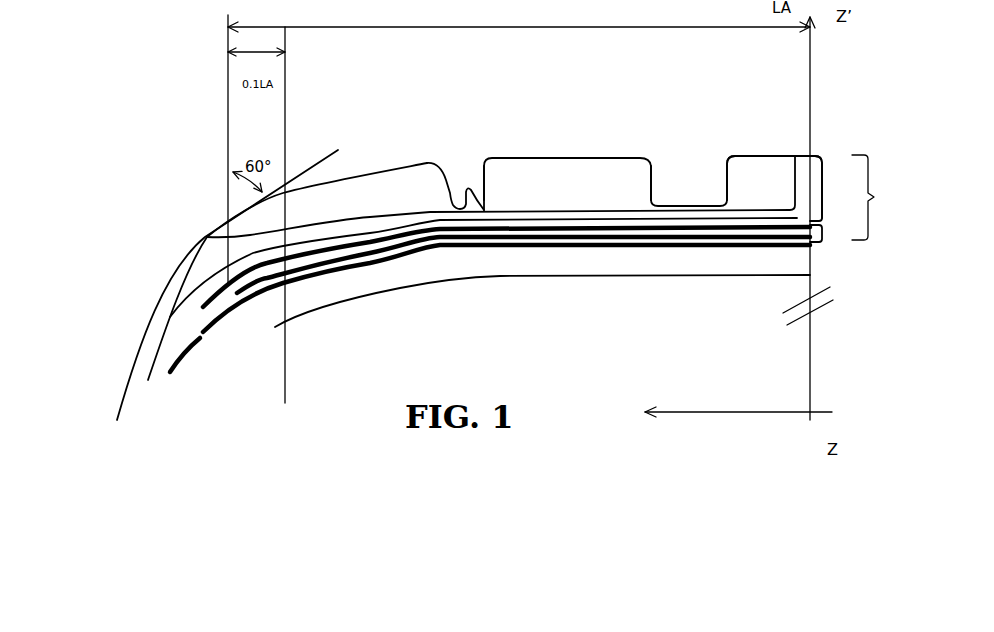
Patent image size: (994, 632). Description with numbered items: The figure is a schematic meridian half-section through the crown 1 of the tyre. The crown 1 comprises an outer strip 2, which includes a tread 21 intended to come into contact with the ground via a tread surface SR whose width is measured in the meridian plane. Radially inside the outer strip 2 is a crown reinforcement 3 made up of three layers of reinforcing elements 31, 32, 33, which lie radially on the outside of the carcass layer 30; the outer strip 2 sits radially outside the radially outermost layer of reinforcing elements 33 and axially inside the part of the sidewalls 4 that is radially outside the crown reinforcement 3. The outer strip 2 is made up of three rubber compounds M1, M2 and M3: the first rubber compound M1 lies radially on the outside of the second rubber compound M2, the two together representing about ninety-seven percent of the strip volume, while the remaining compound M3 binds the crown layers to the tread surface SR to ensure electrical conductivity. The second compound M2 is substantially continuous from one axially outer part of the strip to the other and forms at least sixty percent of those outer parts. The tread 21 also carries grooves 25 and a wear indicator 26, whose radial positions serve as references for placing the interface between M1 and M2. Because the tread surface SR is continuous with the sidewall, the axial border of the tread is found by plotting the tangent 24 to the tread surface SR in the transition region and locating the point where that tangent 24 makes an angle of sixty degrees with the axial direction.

The crown 1 is at (874, 197).
The outer strip 2 is at (822, 187).
The crown reinforcement 3 is at (822, 233).
The sidewalls 4 is at (158, 302).
The tread 21 is at (753, 178).
The tangent 24 is at (160, 258).
The grooves 25 is at (468, 177).
The wear indicator 26 is at (451, 199).
The carcass layer 30 is at (187, 353).
The layer of reinforcing elements 31 is at (500, 248).
The layer of reinforcing elements 32 is at (545, 246).
The radially outermost layer of reinforcing elements 33 is at (403, 262).
The first rubber compound M1 is at (573, 180).
The second rubber compound M2 is at (215, 240).
The third rubber compound M3 is at (803, 185).
The tread surface SR is at (548, 155).